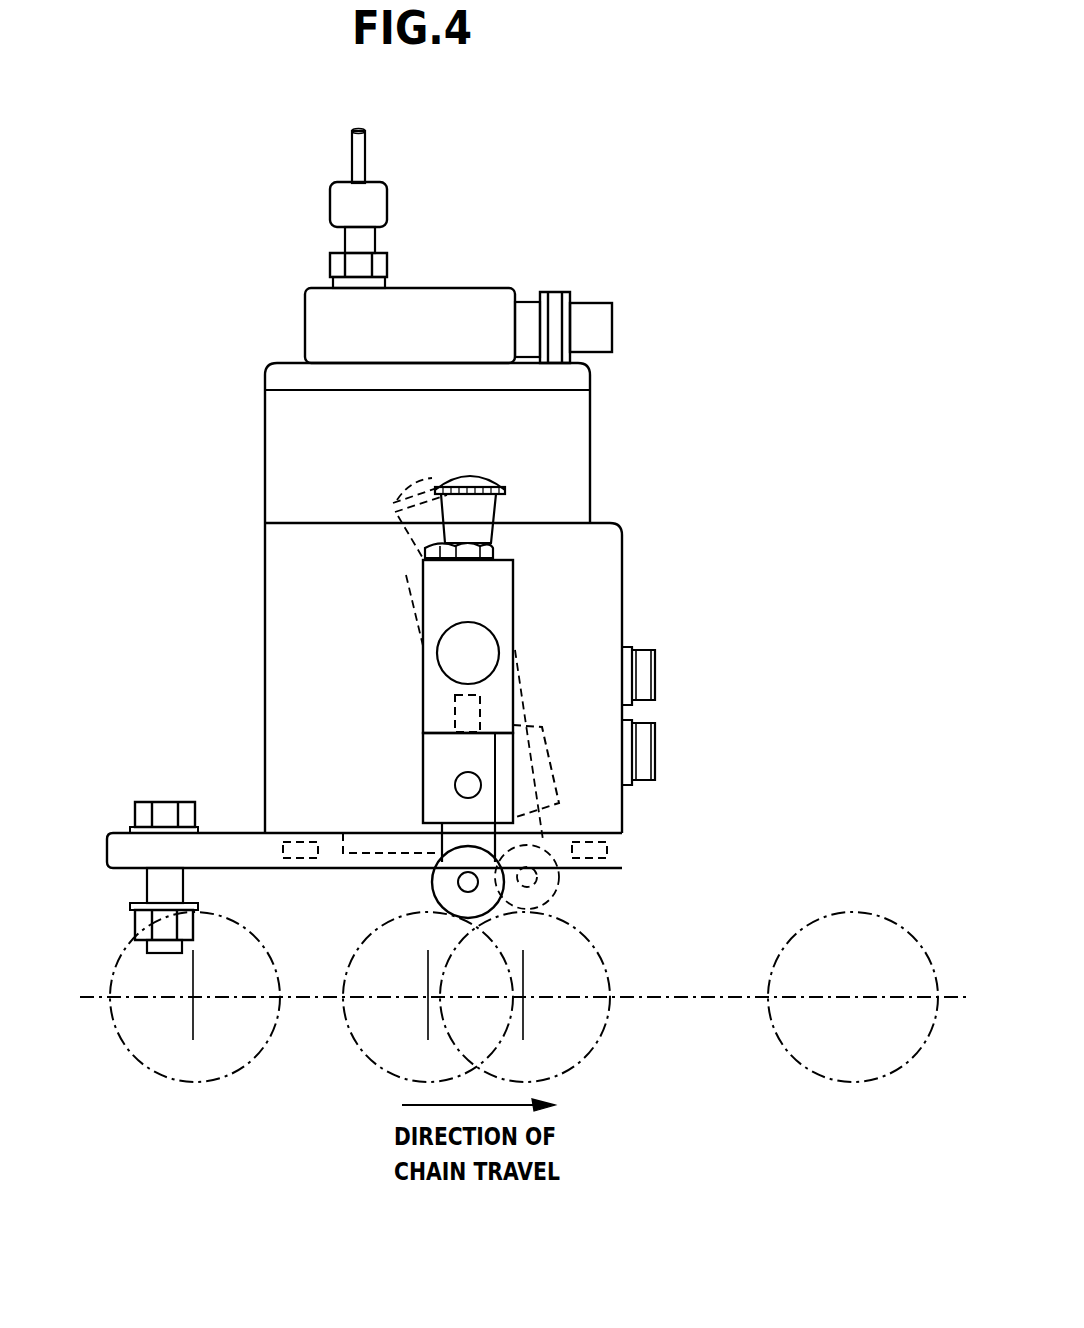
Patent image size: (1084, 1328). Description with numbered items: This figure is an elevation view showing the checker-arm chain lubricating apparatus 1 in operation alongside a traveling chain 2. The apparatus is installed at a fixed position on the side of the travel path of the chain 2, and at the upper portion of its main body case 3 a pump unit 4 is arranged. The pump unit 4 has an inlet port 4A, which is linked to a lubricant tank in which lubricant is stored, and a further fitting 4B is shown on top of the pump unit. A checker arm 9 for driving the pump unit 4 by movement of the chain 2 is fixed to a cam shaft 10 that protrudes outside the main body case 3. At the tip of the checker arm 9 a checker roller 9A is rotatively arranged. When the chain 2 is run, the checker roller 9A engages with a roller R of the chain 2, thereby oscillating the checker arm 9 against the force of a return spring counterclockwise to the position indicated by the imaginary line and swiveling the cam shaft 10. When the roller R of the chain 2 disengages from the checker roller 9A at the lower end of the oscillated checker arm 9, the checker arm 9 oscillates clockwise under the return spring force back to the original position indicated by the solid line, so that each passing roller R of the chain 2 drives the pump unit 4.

The lubricating apparatus 1 is at (624, 524).
The chain 2 is at (742, 997).
The main body case 3 is at (604, 562).
The pump unit 4 is at (583, 418).
The inlet port 4A is at (597, 311).
The top fitting 4B is at (375, 192).
The checker arm 9 is at (412, 694).
The checker roller 9A is at (440, 898).
The cam shaft 10 is at (481, 645).
The roller R is at (597, 950).